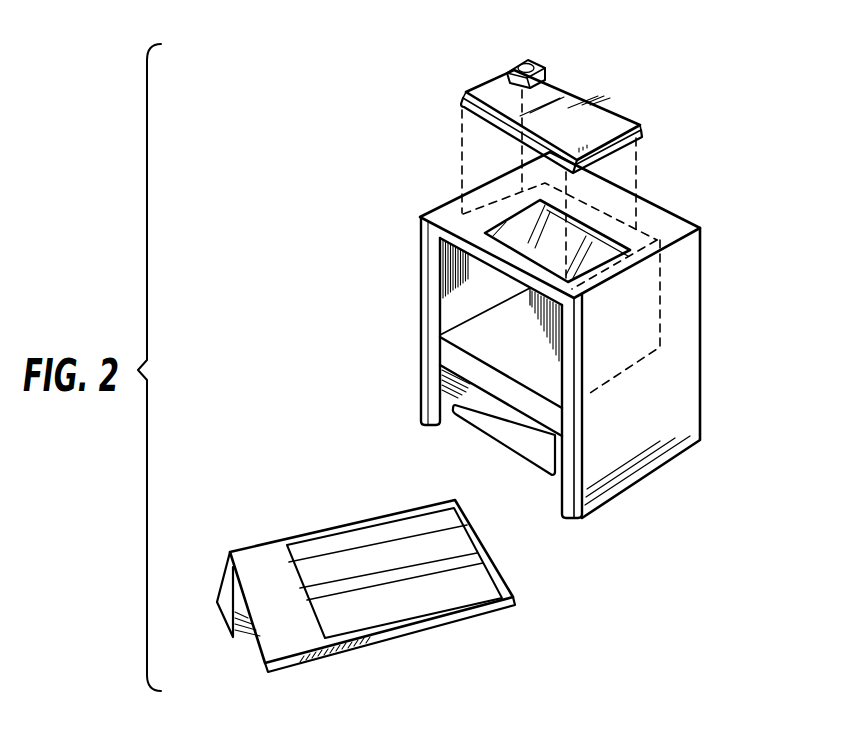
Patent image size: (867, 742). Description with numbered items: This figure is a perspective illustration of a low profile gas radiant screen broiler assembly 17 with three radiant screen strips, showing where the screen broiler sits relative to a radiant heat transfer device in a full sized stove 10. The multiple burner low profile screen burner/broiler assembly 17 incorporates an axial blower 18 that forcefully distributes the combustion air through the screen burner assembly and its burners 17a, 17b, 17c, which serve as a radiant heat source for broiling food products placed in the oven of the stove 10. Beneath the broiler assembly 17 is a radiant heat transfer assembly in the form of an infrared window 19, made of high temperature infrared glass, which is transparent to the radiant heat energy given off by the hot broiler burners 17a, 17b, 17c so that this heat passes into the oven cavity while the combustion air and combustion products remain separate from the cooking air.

The stove 10 is at (383, 307).
The screen burner/broiler assembly 17 is at (595, 103).
The burner 17a is at (345, 535).
The burner 17b is at (368, 577).
The burner 17c is at (397, 620).
The axial blower 18 is at (517, 63).
The infrared window 19 is at (578, 238).